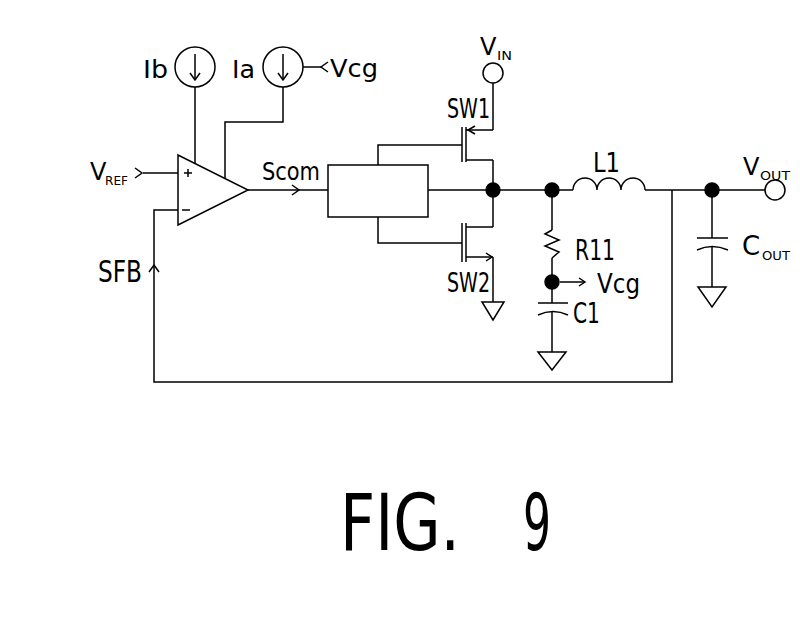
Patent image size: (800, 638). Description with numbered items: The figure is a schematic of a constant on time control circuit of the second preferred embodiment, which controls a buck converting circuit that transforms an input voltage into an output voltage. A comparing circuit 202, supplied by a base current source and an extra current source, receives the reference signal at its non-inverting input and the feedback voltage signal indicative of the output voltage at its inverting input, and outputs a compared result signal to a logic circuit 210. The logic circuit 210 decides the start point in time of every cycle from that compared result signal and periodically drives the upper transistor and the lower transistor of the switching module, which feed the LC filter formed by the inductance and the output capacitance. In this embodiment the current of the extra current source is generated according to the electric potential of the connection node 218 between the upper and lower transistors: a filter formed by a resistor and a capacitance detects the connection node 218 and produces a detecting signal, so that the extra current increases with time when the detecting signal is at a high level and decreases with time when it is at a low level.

The comparing circuit 202 is at (218, 203).
The logic circuit 210 is at (397, 210).
The connection node 218 is at (498, 184).